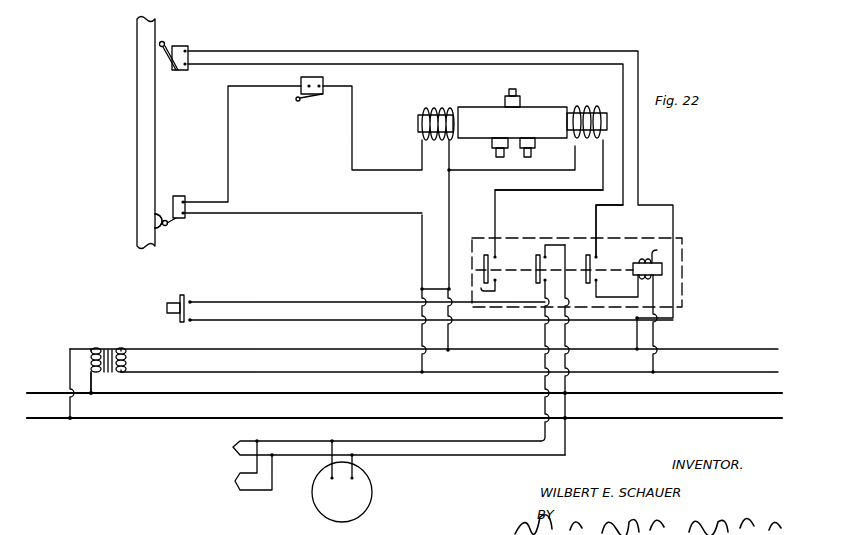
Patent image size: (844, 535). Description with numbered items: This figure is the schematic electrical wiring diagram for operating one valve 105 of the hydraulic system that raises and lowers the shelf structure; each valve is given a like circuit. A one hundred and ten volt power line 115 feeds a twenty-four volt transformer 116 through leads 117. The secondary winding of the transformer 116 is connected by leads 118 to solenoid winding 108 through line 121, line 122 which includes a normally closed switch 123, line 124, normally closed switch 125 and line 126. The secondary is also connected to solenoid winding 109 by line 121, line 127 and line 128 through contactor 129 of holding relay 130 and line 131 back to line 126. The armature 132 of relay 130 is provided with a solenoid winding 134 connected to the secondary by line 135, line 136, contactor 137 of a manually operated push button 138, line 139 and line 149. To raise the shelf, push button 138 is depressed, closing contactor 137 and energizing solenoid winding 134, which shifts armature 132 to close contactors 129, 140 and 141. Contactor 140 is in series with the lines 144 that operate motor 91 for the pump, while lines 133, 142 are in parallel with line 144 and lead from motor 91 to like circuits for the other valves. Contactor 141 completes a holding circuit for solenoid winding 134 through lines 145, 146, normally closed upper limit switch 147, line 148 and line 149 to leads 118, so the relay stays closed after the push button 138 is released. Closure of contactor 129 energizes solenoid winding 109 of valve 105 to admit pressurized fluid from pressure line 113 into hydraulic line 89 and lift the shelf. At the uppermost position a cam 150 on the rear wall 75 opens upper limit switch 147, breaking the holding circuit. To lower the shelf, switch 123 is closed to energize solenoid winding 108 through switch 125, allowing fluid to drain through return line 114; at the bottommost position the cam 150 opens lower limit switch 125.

The rear wall 75 is at (142, 107).
The normally closed upper limit switch 147 is at (189, 47).
The line 148 is at (418, 52).
The normally closed switch 123 is at (325, 84).
The line 124 is at (239, 168).
The normally closed switch 125 is at (192, 190).
The cam 150 is at (157, 222).
The line 122 is at (403, 170).
The solenoid winding 108 is at (431, 108).
The valve 105 is at (473, 117).
The fluid line 89 is at (516, 91).
The return line 114 is at (496, 152).
The pressure line 113 is at (531, 156).
The solenoid winding 109 is at (586, 106).
The line 121 is at (450, 227).
The line 127 is at (549, 198).
The line 128 is at (527, 192).
The line 126 is at (326, 211).
The holding relay 130 is at (644, 240).
The contactor 129 is at (485, 254).
The line 131 is at (504, 289).
The contactor 140 is at (536, 254).
The contactor 141 is at (586, 254).
The line 145 is at (597, 290).
The line 146 is at (598, 218).
The armature 132 is at (612, 266).
The solenoid winding 134 is at (657, 250).
The line 135 is at (658, 299).
The line 149 is at (637, 337).
The contactor 137 is at (183, 294).
The push button 138 is at (167, 308).
The line 136 is at (315, 295).
The line 139 is at (328, 322).
The transformer 116 is at (108, 348).
The leads 117 is at (88, 378).
The leads 118 is at (356, 349).
The power line 115 is at (60, 410).
The lines 144 is at (566, 438).
The line 133 is at (233, 446).
The line 142 is at (235, 481).
The motor 91 is at (366, 502).